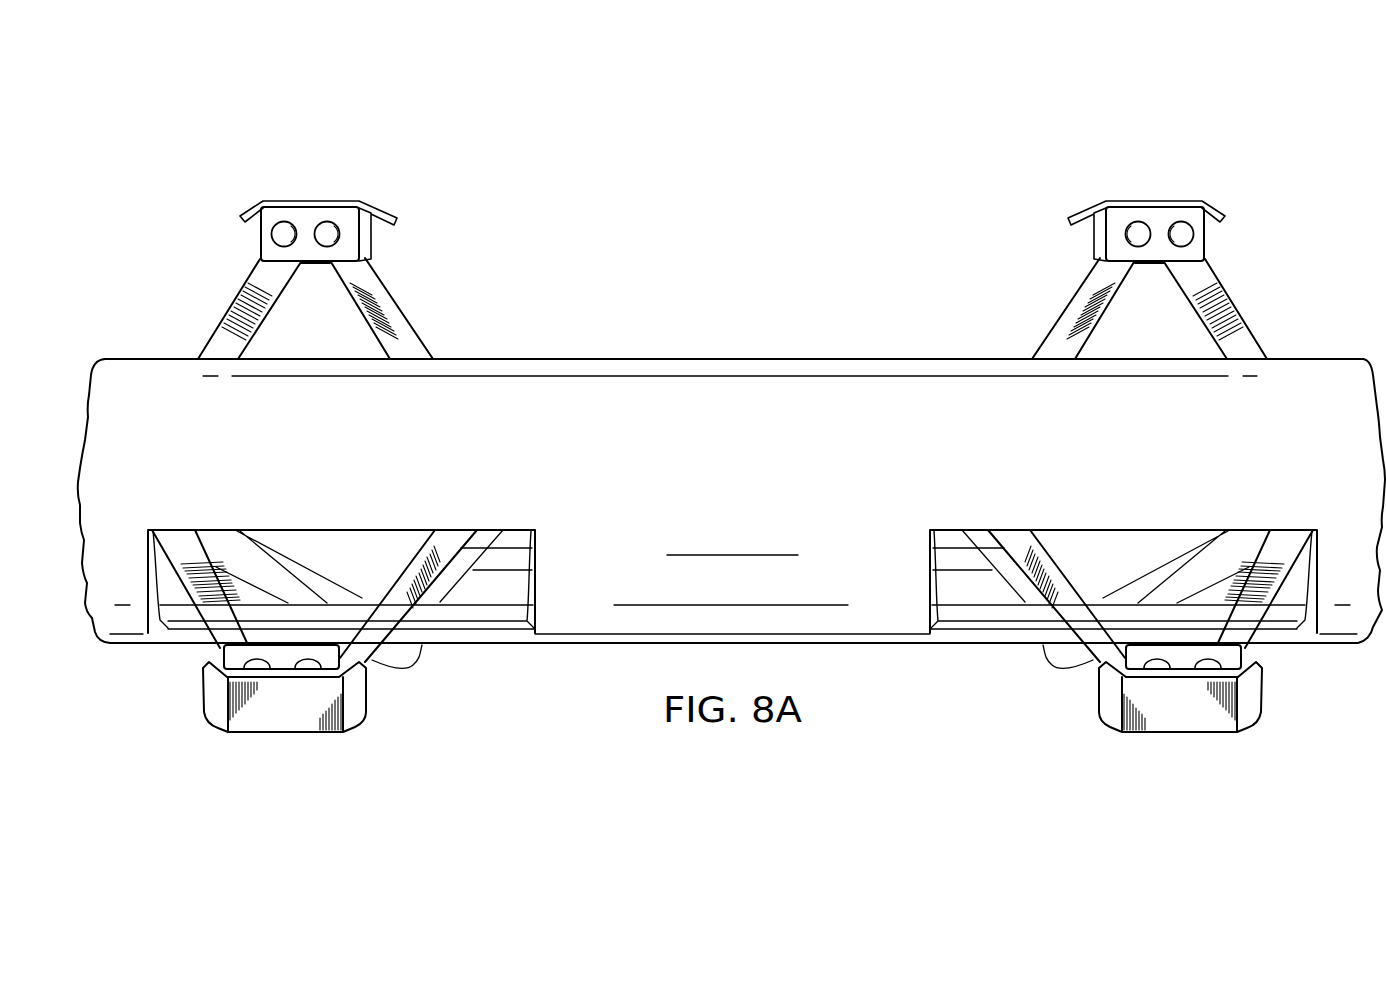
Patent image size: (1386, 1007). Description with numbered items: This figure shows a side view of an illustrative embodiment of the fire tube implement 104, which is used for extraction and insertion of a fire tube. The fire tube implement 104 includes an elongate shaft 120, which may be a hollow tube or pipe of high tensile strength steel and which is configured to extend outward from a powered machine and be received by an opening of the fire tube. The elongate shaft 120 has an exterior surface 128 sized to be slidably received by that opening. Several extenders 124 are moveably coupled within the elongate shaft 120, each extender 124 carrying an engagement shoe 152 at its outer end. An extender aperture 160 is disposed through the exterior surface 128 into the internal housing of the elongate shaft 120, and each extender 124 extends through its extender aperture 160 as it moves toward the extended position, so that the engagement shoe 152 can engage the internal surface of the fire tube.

The fire tube implement 104 is at (731, 433).
The elongate shaft 120 is at (647, 349).
The extender 124 is at (228, 252).
The exterior surface 128 is at (891, 357).
The engagement shoe 152 is at (310, 202).
The extender aperture 160 is at (502, 590).